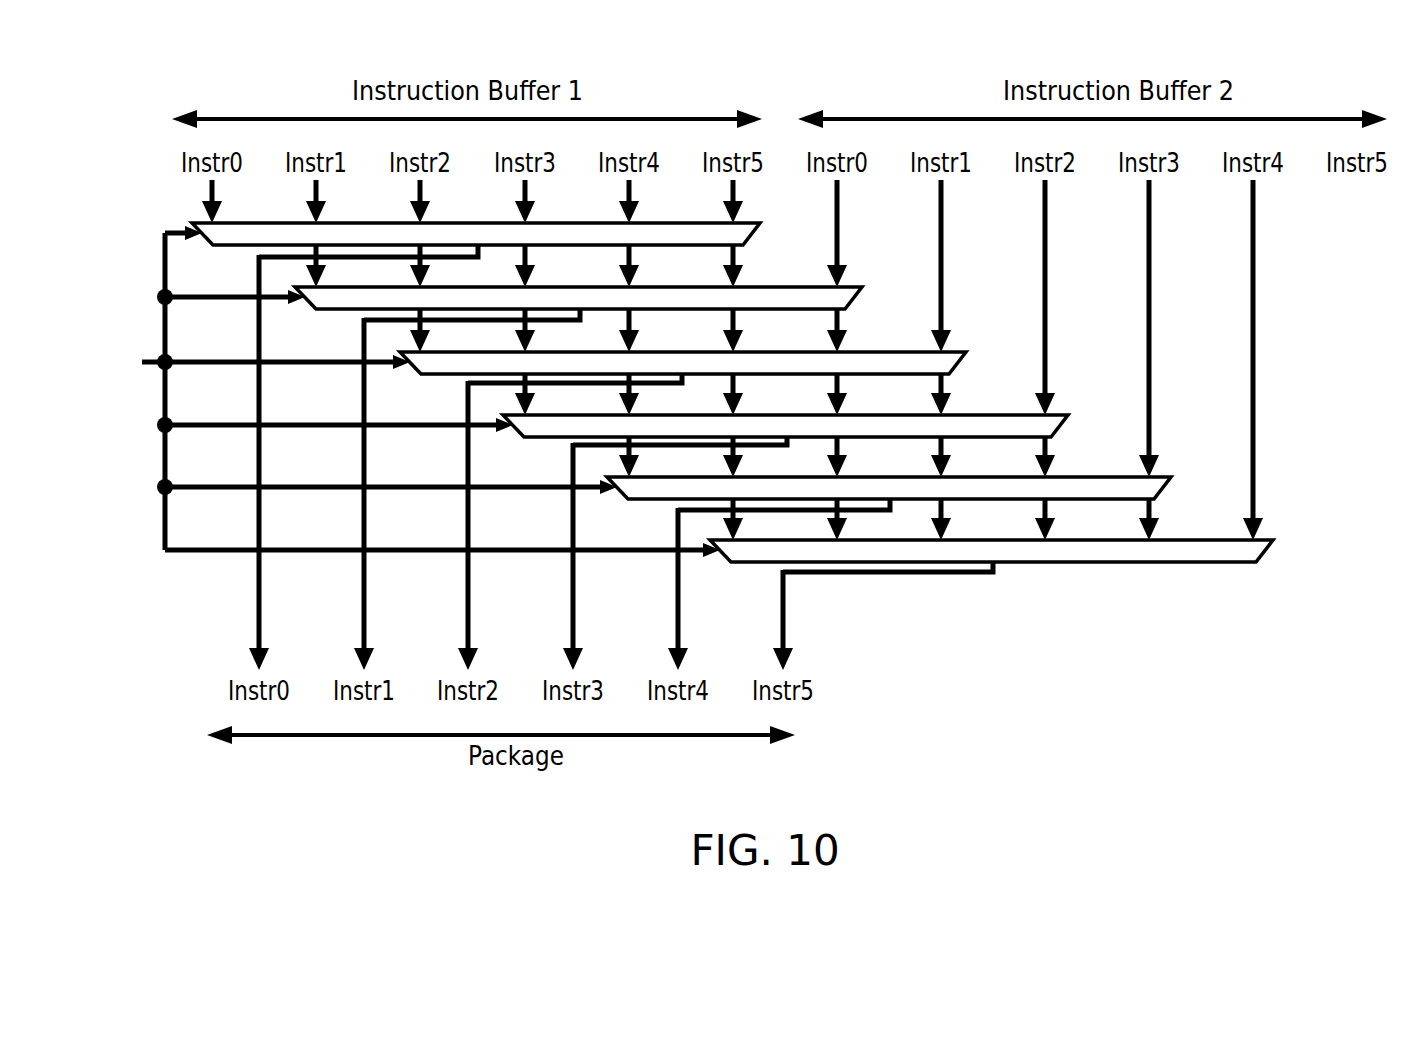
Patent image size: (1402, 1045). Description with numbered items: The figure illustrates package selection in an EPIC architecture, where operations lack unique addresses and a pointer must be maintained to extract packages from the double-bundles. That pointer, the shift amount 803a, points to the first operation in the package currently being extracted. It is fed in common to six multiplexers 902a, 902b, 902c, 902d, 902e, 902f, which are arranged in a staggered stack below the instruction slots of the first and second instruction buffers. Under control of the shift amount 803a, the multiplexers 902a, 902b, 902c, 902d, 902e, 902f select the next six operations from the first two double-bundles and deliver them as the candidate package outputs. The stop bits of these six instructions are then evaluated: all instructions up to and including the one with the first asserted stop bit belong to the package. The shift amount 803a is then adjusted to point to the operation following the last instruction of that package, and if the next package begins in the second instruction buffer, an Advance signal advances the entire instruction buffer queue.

The multiplexer 902a is at (760, 228).
The multiplexer 902b is at (862, 292).
The multiplexer 902c is at (966, 356).
The multiplexer 902d is at (1068, 422).
The multiplexer 902e is at (1171, 487).
The multiplexer 902f is at (1273, 548).
The shift amount 803a is at (97, 398).